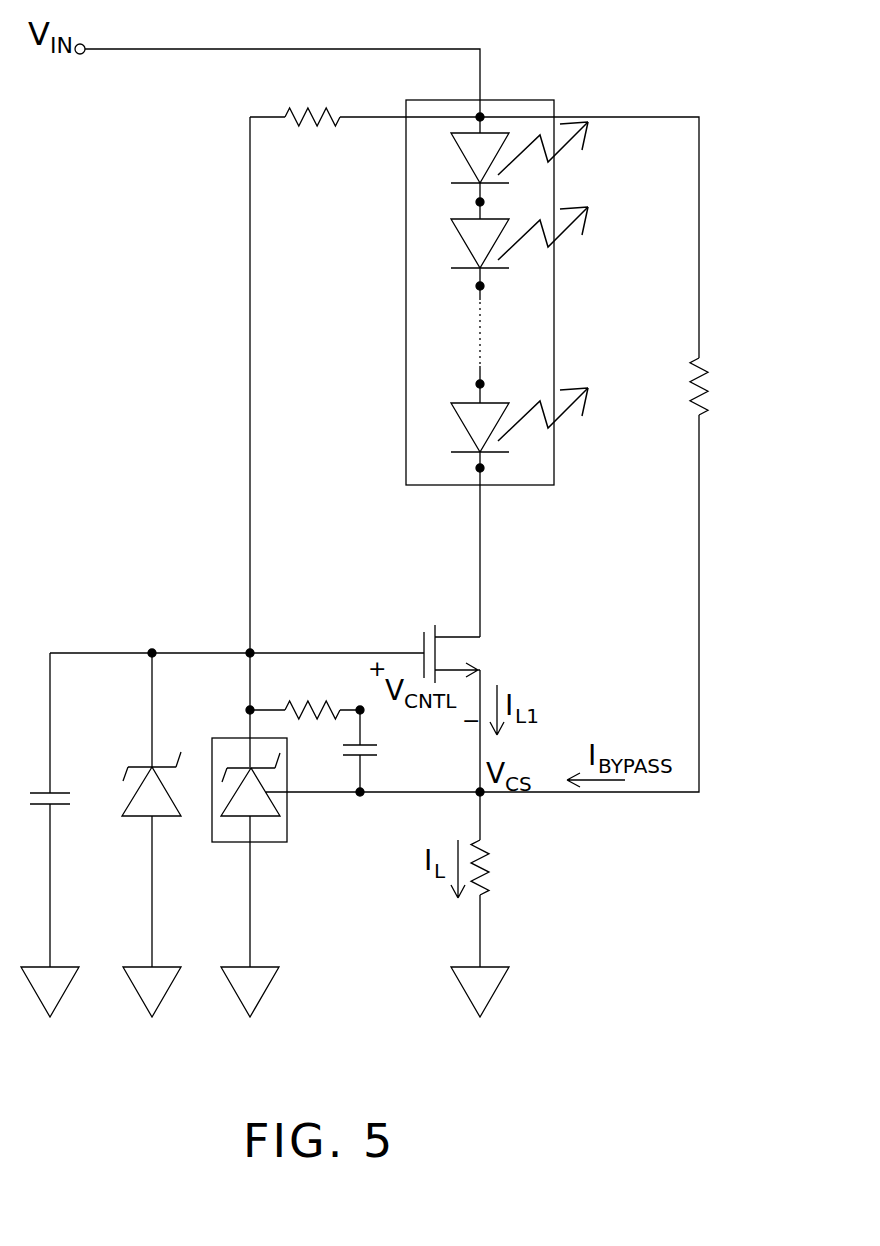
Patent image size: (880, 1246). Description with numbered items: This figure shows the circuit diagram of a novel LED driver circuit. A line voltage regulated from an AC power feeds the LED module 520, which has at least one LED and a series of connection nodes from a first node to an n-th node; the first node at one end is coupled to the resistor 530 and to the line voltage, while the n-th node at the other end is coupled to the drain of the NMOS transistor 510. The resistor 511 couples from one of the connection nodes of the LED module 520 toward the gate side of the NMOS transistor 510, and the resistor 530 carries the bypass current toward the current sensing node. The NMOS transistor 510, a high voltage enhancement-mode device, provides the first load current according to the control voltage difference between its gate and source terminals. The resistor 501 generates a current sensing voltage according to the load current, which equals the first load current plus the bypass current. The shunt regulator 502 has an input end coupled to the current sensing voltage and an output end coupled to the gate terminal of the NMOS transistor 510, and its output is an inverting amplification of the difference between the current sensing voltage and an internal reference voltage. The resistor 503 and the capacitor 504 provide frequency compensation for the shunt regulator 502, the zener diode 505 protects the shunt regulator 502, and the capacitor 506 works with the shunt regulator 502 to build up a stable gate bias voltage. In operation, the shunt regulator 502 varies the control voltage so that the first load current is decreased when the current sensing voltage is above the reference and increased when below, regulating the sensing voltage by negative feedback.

The resistor 501 is at (490, 858).
The shunt regulator 502 is at (277, 827).
The resistor 503 is at (303, 700).
The capacitor 504 is at (378, 752).
The zener diode 505 is at (175, 818).
The capacitor 506 is at (72, 797).
The NMOS transistor 510 is at (478, 652).
The resistor 511 is at (313, 126).
The LED module 520 is at (555, 298).
The resistor 530 is at (708, 398).